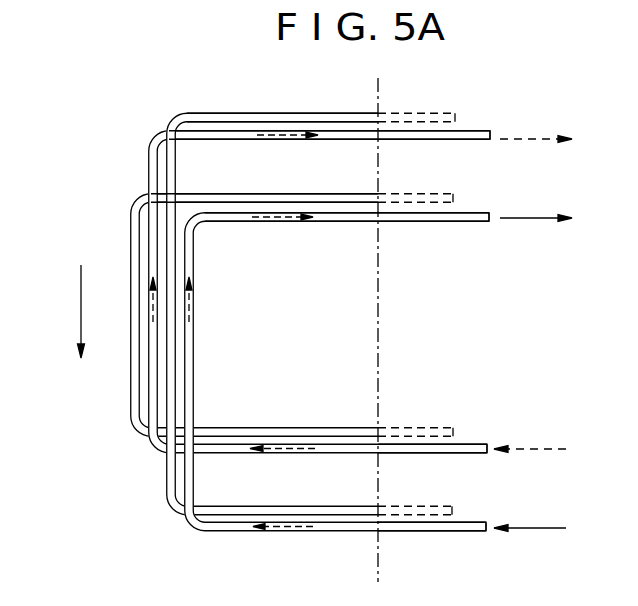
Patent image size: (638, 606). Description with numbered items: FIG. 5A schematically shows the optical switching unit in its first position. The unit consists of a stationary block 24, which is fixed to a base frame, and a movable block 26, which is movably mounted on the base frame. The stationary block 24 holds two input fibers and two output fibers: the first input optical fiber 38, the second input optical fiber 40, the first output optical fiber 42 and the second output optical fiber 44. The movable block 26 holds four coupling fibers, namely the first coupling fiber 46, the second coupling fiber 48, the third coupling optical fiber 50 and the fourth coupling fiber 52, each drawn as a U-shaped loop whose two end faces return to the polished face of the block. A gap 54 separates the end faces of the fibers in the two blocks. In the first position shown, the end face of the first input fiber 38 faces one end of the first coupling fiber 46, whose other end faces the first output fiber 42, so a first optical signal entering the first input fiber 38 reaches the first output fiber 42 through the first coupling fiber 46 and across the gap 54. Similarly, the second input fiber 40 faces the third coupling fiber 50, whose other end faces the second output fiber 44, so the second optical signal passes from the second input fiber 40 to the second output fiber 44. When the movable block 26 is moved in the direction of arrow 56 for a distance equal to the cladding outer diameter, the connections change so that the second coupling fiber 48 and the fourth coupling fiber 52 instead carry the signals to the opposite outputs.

The stationary block 24 is at (450, 81).
The movable block 26 is at (306, 81).
The first input optical fiber 38 is at (470, 531).
The second input optical fiber 40 is at (470, 453).
The first output optical fiber 42 is at (478, 222).
The second output optical fiber 44 is at (478, 140).
The first coupling fiber 46 is at (326, 222).
The second coupling fiber 48 is at (238, 104).
The third coupling optical fiber 50 is at (233, 140).
The fourth coupling fiber 52 is at (316, 193).
The gap 54 is at (381, 319).
The arrow 56 is at (79, 309).